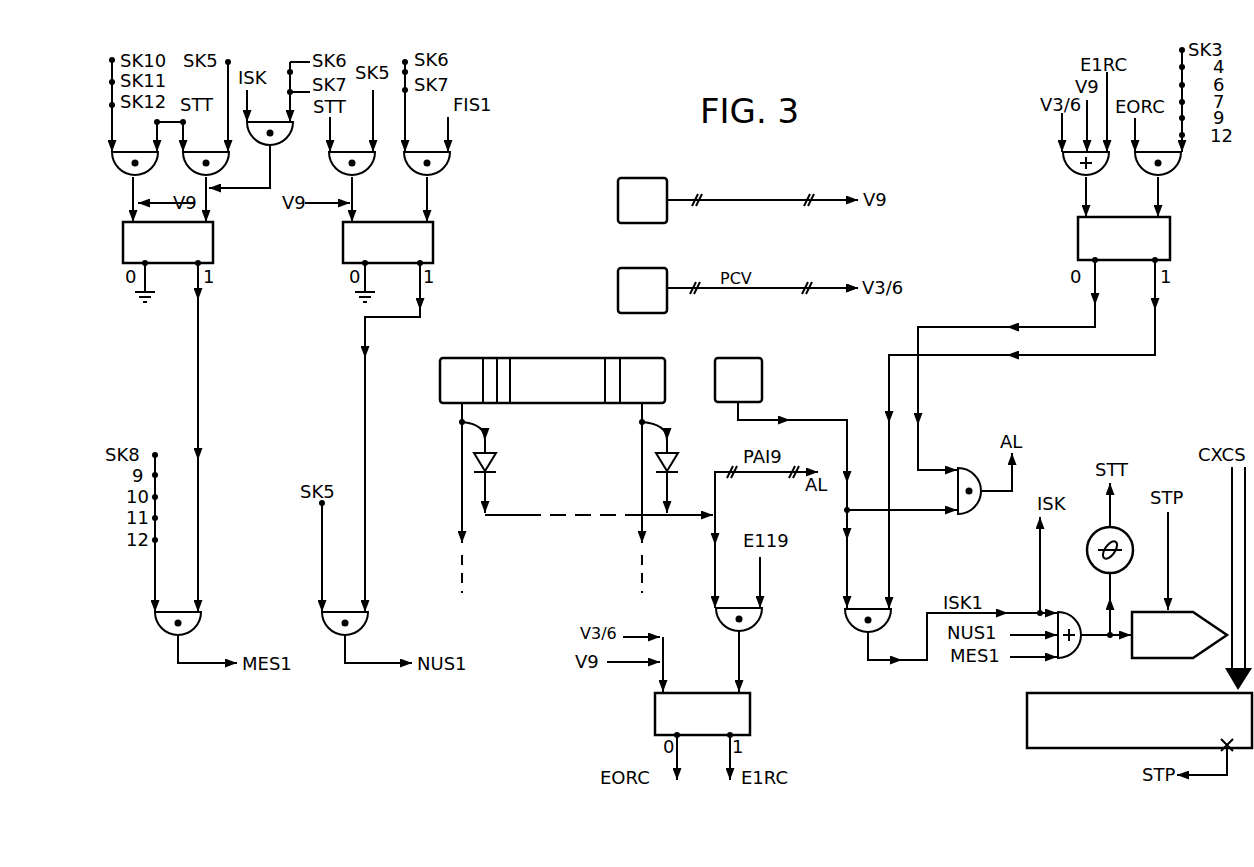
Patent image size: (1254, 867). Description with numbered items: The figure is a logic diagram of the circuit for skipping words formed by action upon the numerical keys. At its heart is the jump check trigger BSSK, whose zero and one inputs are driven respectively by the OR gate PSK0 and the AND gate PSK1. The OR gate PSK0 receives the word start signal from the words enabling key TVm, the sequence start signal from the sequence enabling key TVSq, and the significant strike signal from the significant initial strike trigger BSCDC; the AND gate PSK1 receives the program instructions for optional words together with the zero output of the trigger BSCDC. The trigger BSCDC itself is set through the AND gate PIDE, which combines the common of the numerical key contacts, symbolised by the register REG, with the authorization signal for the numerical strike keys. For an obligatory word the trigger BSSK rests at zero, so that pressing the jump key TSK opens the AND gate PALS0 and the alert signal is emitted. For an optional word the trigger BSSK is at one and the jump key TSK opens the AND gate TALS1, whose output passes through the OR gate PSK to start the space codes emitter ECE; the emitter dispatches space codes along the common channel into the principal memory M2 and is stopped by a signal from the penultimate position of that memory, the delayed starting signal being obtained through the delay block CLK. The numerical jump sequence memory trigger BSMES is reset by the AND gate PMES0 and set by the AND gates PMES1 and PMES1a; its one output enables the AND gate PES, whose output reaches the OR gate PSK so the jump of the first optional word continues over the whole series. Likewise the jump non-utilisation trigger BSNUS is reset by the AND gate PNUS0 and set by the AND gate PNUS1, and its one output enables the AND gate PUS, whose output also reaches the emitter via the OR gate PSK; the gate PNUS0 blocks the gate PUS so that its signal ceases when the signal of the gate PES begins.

The AND gate PMES0 is at (152, 174).
The AND gate PMES1a is at (227, 171).
The AND gate PMES1 is at (286, 143).
The AND gate PNUS0 is at (370, 174).
The AND gate PNUS1 is at (445, 174).
The numerical jump sequence memory trigger BSMES is at (168, 242).
The jump non-utilisation trigger BSNUS is at (388, 242).
The AND gate PES is at (197, 624).
The AND gate PUS is at (364, 624).
The sequence enabling key TVSq is at (642, 200).
The words enabling key TVm is at (642, 290).
The register 0-9 REG is at (552, 380).
The jump key TSK is at (738, 380).
The AND gate PIDE is at (761, 622).
The significant initial strike trigger BSCDC is at (702, 714).
The AND gate TALS1 is at (881, 634).
The AND gate PALS0 is at (991, 500).
The OR gate PSK is at (1089, 639).
The pulse generator CLK is at (1110, 550).
The space codes emitter ECE is at (1179, 635).
The principal memory M2 is at (1139, 720).
The OR gate PSK0 is at (1100, 174).
The AND gate PSK1 is at (1171, 174).
The jump check trigger BSSK is at (1124, 238).